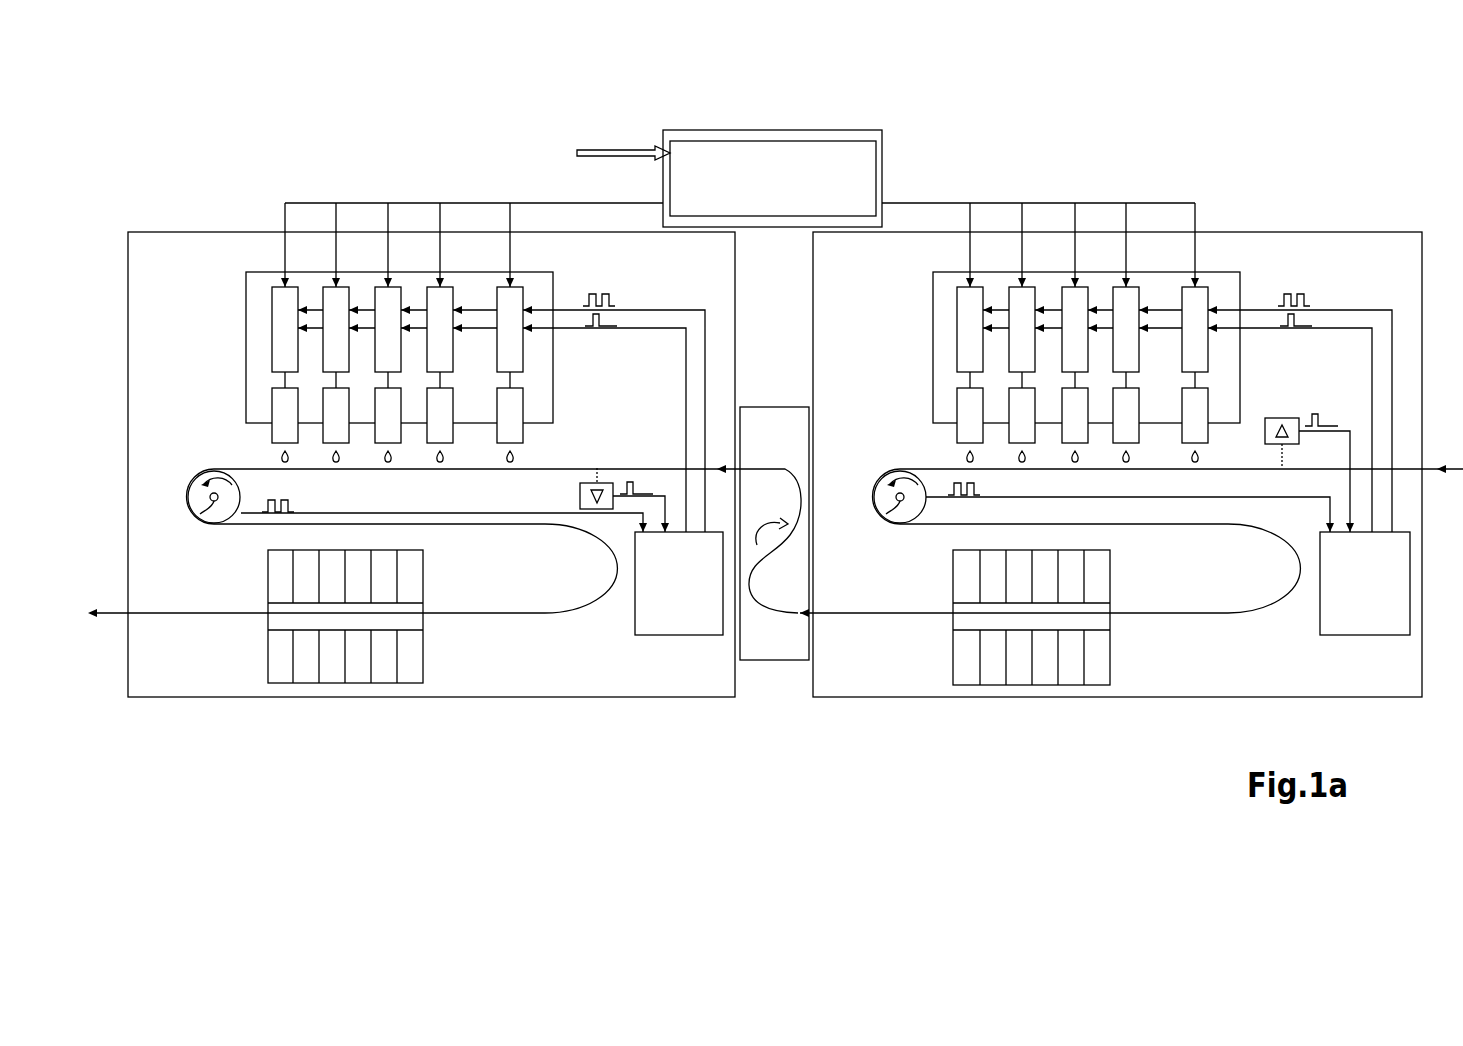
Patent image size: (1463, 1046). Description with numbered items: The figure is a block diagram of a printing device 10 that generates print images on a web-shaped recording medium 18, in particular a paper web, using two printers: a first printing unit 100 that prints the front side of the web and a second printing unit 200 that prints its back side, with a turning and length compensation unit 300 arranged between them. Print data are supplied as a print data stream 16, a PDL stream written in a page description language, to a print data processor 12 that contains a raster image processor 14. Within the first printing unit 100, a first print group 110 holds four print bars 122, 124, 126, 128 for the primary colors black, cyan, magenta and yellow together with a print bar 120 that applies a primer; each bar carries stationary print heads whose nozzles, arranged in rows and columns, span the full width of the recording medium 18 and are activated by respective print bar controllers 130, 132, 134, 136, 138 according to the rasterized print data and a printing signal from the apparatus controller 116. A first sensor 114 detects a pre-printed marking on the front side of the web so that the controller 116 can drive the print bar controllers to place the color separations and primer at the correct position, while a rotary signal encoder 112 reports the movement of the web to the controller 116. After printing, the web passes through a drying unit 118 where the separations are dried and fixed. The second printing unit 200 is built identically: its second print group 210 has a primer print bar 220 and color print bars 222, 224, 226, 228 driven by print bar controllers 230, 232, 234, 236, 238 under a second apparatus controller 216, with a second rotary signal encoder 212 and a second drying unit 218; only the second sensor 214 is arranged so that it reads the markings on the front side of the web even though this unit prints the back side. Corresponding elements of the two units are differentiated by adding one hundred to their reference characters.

The printing device 10 is at (1288, 138).
The print data processor 12 is at (882, 138).
The raster image processor 14 is at (773, 178).
The print data stream 16 is at (622, 150).
The recording medium 18 is at (1450, 469).
The first printing unit 100 is at (1325, 232).
The first print group 110 is at (1240, 288).
The first rotary signal encoder 112 is at (875, 506).
The first sensor 114 is at (1282, 418).
The first apparatus controller 116 is at (1365, 583).
The first drying unit 118 is at (1110, 578).
The first print bar for primer 120 is at (1182, 411).
The first print bar 122 is at (1113, 411).
The first print bar 124 is at (1062, 411).
The first print bar 126 is at (1009, 411).
The first print bar 128 is at (957, 411).
The first print bar controller 130 is at (1182, 298).
The first print bar controller 132 is at (1113, 298).
The first print bar controller 134 is at (1062, 298).
The first print bar controller 136 is at (1009, 298).
The first print bar controller 138 is at (957, 298).
The second printing unit 200 is at (221, 232).
The second print group 210 is at (245, 290).
The second rotary signal encoder 212 is at (189, 506).
The second sensor 214 is at (597, 468).
The second apparatus controller 216 is at (679, 583).
The second drying unit 218 is at (423, 578).
The second print bar for primer 220 is at (497, 411).
The second print bar 222 is at (427, 411).
The second print bar 224 is at (375, 411).
The second print bar 226 is at (323, 411).
The second print bar 228 is at (272, 411).
The second print bar controller 230 is at (497, 298).
The second print bar controller 232 is at (427, 298).
The second print bar controller 234 is at (375, 298).
The second print bar controller 236 is at (323, 298).
The second print bar controller 238 is at (272, 298).
The turning and length compensation unit 300 is at (772, 660).